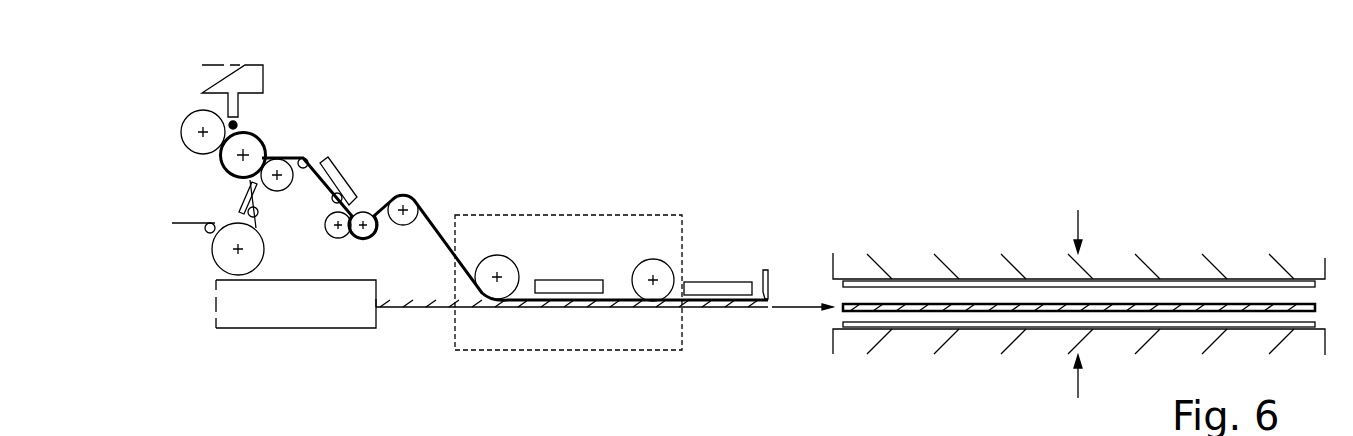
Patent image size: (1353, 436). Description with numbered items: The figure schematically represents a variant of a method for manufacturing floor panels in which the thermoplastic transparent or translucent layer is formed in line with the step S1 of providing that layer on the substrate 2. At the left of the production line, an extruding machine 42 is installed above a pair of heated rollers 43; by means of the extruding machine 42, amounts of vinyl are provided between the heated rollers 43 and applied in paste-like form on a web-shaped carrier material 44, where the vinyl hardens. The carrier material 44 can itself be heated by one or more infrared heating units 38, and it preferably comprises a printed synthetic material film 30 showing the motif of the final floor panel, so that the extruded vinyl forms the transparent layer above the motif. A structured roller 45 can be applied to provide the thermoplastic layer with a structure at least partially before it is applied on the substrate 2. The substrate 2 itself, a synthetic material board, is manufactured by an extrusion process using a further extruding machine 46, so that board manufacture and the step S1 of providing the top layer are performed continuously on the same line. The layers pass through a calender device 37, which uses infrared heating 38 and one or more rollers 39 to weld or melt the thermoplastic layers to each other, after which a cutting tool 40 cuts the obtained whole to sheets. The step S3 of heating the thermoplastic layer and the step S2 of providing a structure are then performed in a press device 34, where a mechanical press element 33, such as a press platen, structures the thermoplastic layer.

The substrate 2 is at (425, 310).
The synthetic material film 30 is at (265, 188).
The press element 33 is at (1110, 280).
The press device 34 is at (1220, 252).
The calender device 37 is at (593, 215).
The infrared heating 38 is at (237, 193).
The rollers 39 is at (497, 255).
The cutting tool 40 is at (768, 277).
The extruding machine 42 is at (249, 82).
The heated rollers 43 is at (220, 157).
The web-shaped carrier material 44 is at (192, 225).
The structured roller 45 is at (365, 217).
The extruding machine 46 is at (300, 313).
The step of providing the top layer on the substrate S1 is at (553, 172).
The step of providing a structure S2 is at (970, 226).
The step of heating the thermoplastic layer S3 is at (719, 222).